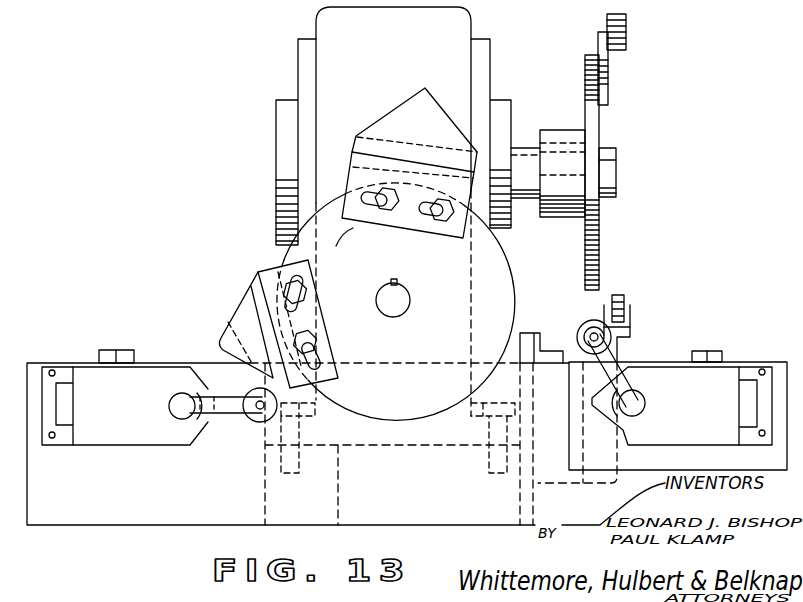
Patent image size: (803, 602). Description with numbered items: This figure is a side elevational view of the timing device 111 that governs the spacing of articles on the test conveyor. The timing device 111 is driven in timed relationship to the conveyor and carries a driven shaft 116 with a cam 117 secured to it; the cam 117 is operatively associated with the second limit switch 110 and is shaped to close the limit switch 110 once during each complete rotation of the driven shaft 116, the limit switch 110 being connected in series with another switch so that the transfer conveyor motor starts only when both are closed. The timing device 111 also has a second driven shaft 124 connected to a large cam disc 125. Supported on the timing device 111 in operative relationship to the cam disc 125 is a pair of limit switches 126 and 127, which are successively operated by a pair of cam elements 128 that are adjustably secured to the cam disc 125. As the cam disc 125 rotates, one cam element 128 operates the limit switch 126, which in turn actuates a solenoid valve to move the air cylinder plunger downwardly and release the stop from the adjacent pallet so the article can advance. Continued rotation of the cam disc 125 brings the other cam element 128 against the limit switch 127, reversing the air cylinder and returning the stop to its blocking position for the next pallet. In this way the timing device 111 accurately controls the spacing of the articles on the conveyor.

The second limit switch 110 is at (632, 314).
The timing device 111 is at (510, 49).
The driven shaft 116 is at (617, 183).
The cam 117 is at (600, 250).
The second driven shaft 124 is at (401, 303).
The cam disc 125 is at (511, 306).
The limit switch 126 is at (163, 373).
The limit switch 127 is at (660, 372).
The cam elements 128 is at (412, 99).